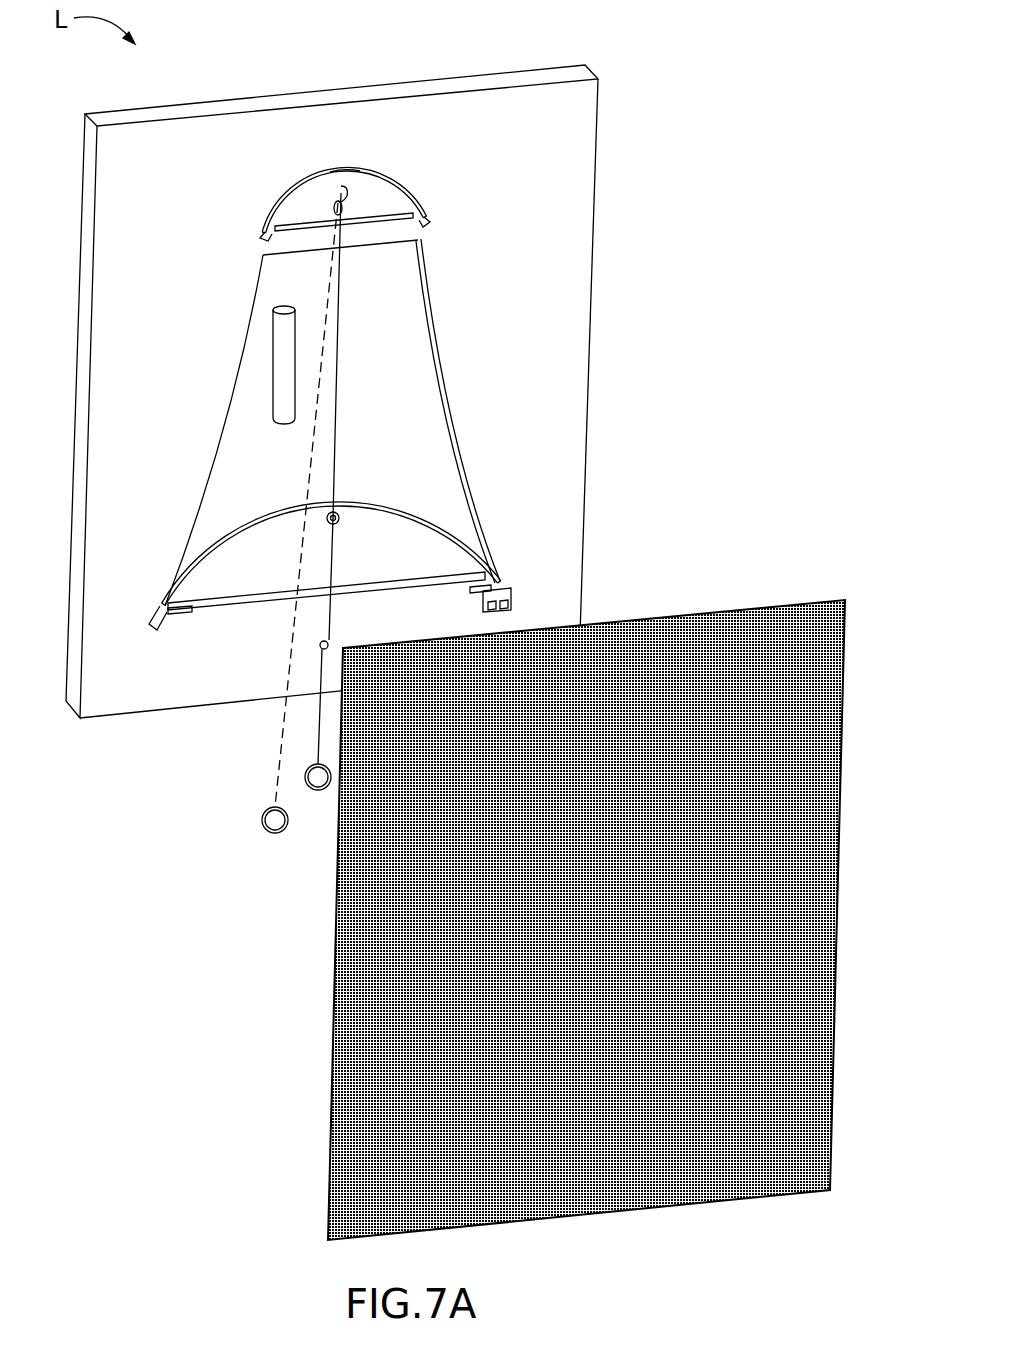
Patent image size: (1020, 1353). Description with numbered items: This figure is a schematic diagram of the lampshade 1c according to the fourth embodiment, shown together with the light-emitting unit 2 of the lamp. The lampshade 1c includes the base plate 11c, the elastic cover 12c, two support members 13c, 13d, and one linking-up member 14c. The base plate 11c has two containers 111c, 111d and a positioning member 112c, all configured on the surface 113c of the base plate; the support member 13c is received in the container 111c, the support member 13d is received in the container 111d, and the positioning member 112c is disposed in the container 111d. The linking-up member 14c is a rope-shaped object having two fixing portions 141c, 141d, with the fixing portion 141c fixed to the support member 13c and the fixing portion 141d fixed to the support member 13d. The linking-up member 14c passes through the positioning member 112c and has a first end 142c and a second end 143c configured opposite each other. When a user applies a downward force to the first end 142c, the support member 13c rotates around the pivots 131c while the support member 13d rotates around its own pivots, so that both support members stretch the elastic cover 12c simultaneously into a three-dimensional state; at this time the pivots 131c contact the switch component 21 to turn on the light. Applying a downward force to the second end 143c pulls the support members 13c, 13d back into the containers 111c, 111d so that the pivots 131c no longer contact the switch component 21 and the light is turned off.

The lampshade 1c is at (516, 56).
The base plate 11c is at (557, 513).
The surface 113c is at (567, 115).
The elastic cover 12c is at (603, 623).
The support member 13c is at (440, 520).
The support member 13d is at (275, 195).
The pivots 131c is at (468, 588).
The linking-up member 14c is at (338, 258).
The container 111c is at (405, 348).
The container 111d is at (372, 190).
The positioning member 112c is at (323, 170).
The fixing portion 141c is at (328, 515).
The fixing portion 141d is at (347, 183).
The first end 142c is at (307, 740).
The second end 143c is at (273, 723).
The light-emitting unit 2 is at (265, 357).
The switch component 21 is at (507, 590).